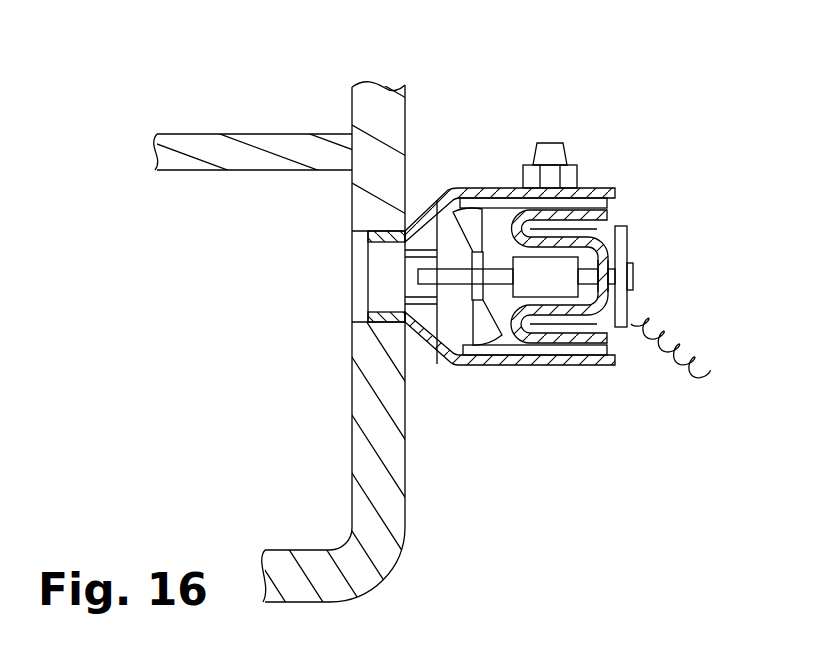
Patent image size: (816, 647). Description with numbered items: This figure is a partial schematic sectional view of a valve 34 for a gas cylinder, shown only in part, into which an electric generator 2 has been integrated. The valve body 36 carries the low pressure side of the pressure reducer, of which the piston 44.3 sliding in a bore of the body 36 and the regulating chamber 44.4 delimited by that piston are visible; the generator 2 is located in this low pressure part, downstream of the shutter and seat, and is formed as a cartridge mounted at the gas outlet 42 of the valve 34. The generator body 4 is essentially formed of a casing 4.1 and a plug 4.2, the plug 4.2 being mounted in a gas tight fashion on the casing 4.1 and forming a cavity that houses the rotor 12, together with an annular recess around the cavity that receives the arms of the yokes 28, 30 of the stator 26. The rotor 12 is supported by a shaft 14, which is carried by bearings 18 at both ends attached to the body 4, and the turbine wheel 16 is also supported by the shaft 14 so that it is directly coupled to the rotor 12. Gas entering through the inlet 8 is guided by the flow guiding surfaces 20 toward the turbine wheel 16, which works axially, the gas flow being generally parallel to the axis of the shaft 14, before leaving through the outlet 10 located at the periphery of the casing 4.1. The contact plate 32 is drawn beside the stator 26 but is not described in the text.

The electric generator 2 is at (758, 220).
The body 4 is at (521, 131).
The casing 4.1 is at (467, 191).
The plug 4.2 is at (607, 352).
The inlet 8 is at (388, 278).
The outlet 10 is at (552, 143).
The rotor 12 is at (543, 278).
The shaft 14 is at (460, 278).
The turbine wheel 16 is at (485, 323).
The bearings 18 is at (604, 294).
The flow guiding surfaces 20 is at (405, 255).
The stator 26 is at (683, 268).
The yoke 28 is at (650, 294).
The yoke 30 is at (608, 228).
The contact plate 32 is at (628, 243).
The valve 34 is at (129, 104).
The body 36 is at (400, 113).
The gas outlet 42 is at (358, 315).
The piston 44.3 is at (201, 152).
The regulating chamber 44.4 is at (311, 523).